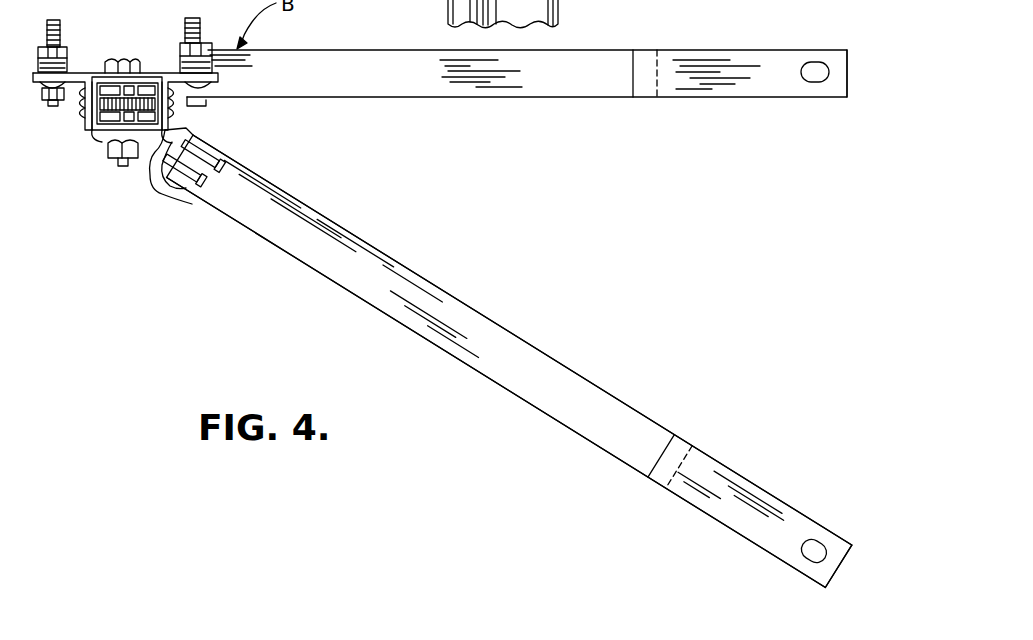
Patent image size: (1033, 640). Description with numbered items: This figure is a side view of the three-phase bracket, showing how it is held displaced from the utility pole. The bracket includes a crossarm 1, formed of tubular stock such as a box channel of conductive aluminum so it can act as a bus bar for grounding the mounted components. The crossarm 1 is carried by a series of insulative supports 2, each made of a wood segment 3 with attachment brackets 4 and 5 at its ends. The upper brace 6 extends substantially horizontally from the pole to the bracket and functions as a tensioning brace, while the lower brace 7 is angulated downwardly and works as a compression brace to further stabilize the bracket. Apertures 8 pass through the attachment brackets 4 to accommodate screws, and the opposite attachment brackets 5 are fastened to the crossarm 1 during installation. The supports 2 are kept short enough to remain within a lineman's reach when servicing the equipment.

The crossarm 1 is at (93, 142).
The supports 2 is at (403, 103).
The wood segment 3 is at (537, 86).
The attachment bracket 4 is at (768, 97).
The attachment bracket 5 is at (165, 66).
The upper pair of braces 6 is at (352, 86).
The lower pair of braces 7 is at (320, 260).
The apertures 8 is at (801, 72).